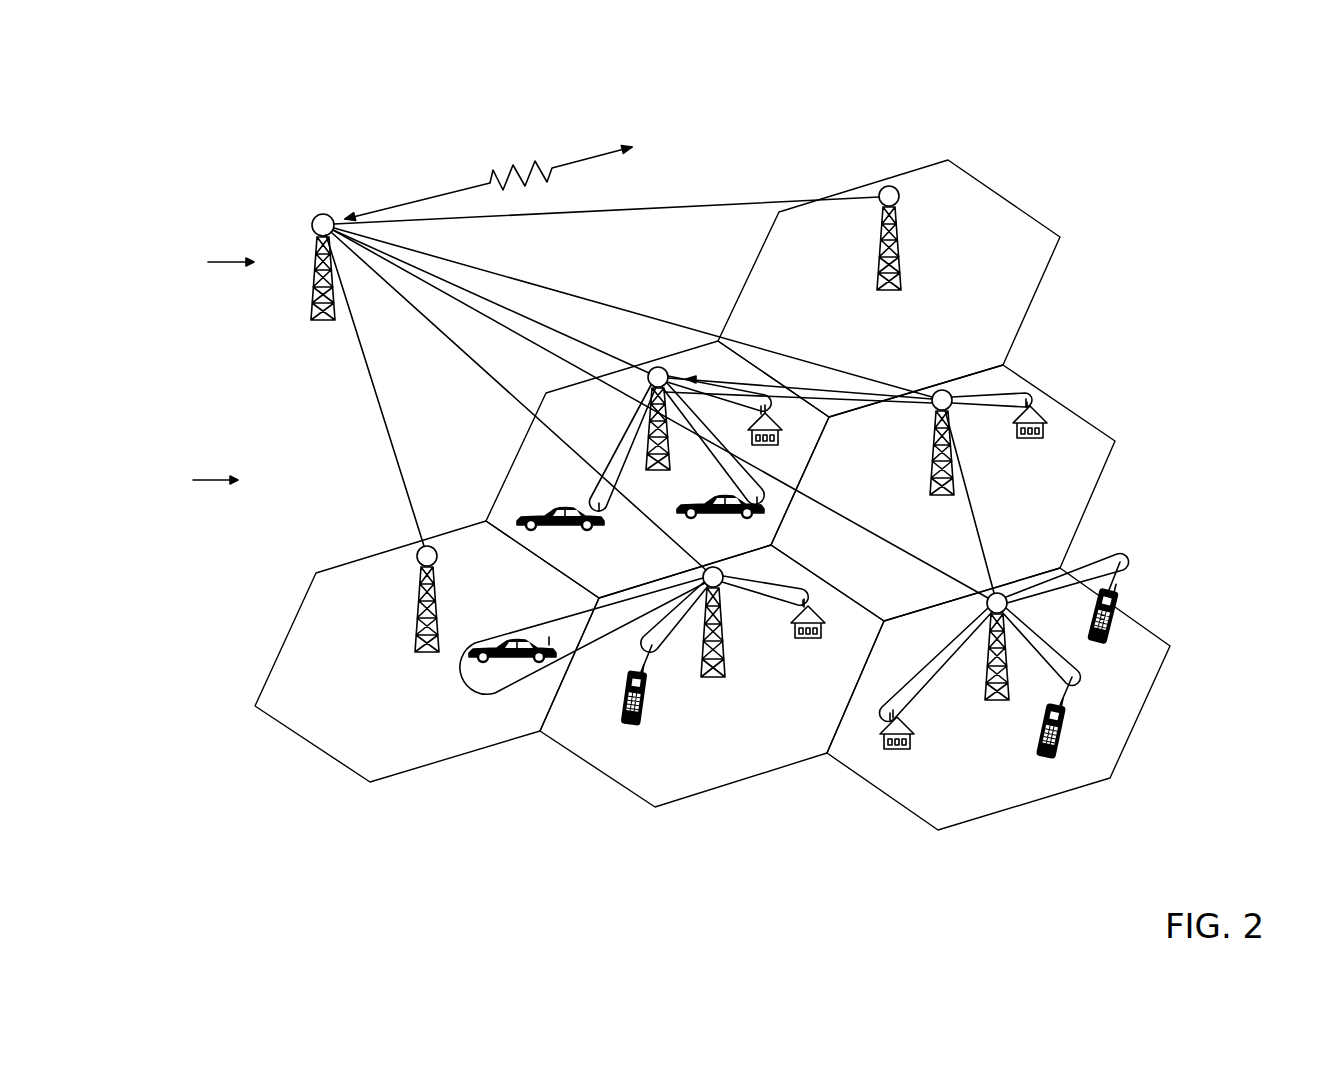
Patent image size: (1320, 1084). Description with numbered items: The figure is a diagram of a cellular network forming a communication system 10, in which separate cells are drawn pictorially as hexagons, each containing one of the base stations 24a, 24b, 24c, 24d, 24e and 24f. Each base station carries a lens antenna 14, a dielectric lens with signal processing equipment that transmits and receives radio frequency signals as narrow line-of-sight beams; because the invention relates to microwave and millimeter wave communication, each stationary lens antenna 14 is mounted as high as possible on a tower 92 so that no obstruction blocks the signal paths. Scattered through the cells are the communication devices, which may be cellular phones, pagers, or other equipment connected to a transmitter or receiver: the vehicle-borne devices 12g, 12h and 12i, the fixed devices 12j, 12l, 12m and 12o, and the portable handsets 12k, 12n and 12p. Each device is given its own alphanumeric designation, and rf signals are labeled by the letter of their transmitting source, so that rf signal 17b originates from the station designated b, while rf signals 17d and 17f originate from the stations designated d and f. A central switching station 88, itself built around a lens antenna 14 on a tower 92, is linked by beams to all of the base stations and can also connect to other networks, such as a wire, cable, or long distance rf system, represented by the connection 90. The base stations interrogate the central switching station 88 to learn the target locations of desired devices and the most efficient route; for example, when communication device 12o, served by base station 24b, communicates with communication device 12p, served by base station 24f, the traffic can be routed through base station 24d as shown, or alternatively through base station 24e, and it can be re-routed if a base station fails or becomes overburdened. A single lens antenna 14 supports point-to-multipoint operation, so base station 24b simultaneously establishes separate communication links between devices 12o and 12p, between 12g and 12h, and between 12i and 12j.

The communication system 10 is at (195, 480).
The communication device 12g is at (475, 688).
The communication device 12h is at (590, 530).
The communication device 12i is at (712, 519).
The communication device 12j is at (1041, 437).
The communication device 12k is at (650, 730).
The communication device 12l is at (820, 642).
The communication device 12m is at (893, 750).
The communication device 12n is at (1063, 722).
The communication device 12o is at (778, 444).
The communication device 12p is at (1118, 602).
The lens antenna 14 is at (312, 222).
The rf signal 17b is at (848, 398).
The rf signal 17d is at (855, 404).
The rf signal 17f is at (985, 545).
The base station 24a is at (417, 560).
The base station 24b is at (660, 366).
The base station 24c is at (878, 206).
The base station 24d is at (951, 410).
The base station 24e is at (725, 572).
The base station 24f is at (1002, 592).
The central switching station 88 is at (213, 262).
The connection to other communication networks 90 is at (597, 156).
The tower 92 is at (310, 314).